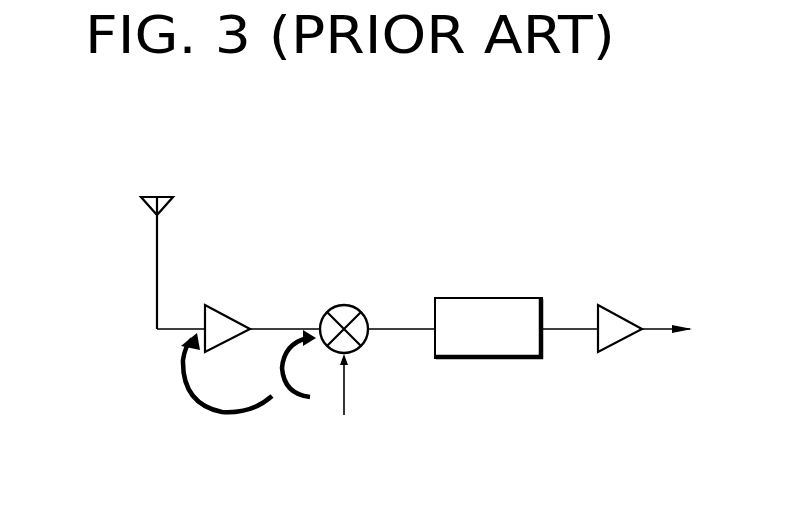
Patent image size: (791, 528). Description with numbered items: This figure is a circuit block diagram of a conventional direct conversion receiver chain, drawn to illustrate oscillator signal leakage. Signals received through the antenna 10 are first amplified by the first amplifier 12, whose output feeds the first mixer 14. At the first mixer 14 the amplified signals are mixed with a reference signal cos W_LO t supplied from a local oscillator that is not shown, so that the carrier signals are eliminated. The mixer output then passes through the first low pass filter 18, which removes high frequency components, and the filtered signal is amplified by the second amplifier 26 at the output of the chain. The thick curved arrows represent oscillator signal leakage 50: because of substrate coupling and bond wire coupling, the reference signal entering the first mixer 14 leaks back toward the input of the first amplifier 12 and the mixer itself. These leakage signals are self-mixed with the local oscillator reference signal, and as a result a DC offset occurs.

The antenna 10 is at (163, 195).
The first amplifier 12 is at (229, 315).
The first mixer 14 is at (344, 303).
The first low pass filter 18 is at (510, 298).
The second amplifier 26 is at (622, 305).
The oscillator signal leakage 50 is at (220, 413).